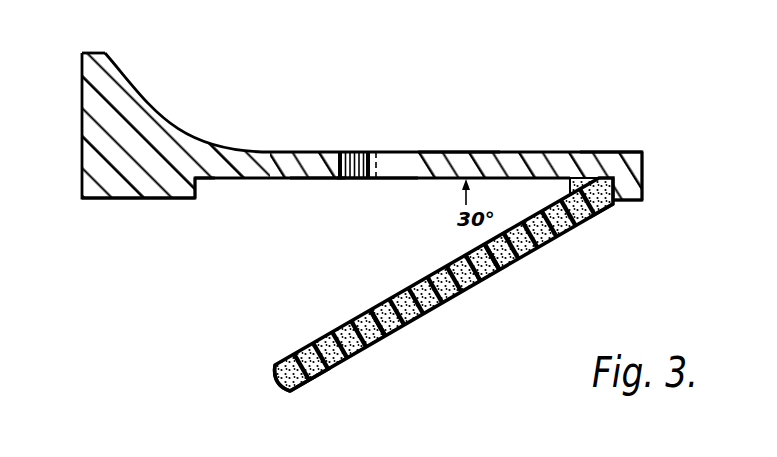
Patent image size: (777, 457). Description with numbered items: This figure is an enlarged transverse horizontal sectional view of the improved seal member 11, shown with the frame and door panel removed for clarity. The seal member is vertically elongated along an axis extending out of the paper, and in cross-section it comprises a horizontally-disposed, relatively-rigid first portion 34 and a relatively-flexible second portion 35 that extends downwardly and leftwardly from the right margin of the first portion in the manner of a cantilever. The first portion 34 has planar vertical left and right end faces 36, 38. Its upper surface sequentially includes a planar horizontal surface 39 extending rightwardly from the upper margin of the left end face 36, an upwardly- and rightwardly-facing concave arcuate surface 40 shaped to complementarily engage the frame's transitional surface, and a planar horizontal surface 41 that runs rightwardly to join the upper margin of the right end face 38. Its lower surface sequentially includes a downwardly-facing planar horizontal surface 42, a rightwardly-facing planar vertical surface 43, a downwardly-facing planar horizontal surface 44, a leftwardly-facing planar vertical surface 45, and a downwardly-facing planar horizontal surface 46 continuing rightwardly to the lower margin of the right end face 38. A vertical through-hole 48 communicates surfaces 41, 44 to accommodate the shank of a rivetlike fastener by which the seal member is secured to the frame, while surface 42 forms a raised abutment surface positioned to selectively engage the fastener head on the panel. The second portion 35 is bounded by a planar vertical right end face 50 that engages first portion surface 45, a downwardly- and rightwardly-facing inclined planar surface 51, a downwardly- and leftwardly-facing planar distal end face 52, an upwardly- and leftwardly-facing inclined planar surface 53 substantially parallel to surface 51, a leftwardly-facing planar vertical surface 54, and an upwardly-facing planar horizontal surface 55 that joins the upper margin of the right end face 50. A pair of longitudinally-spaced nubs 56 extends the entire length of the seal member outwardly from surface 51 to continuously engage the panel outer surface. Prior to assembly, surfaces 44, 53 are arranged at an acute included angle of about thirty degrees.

The seal member 11 is at (254, 136).
The first portion 34 is at (292, 185).
The second portion 35 is at (422, 322).
The left end face 36 is at (82, 128).
The right end face 38 is at (642, 163).
The planar horizontal surface 39 is at (93, 53).
The concave arcuate surface 40 is at (147, 108).
The planar horizontal surface 41 is at (453, 153).
The planar horizontal surface 42 is at (123, 199).
The planar vertical surface 43 is at (195, 187).
The planar horizontal surface 44 is at (317, 180).
The planar vertical surface 45 is at (610, 206).
The planar horizontal surface 46 is at (628, 201).
The vertical through-hole 48 is at (418, 157).
The right end face 50 is at (642, 185).
The inclined planar surface 51 is at (503, 270).
The distal end face 52 is at (284, 380).
The inclined planar surface 53 is at (380, 302).
The planar vertical surface 54 is at (568, 179).
The planar horizontal surface 55 is at (602, 152).
The nubs 56 is at (303, 386).